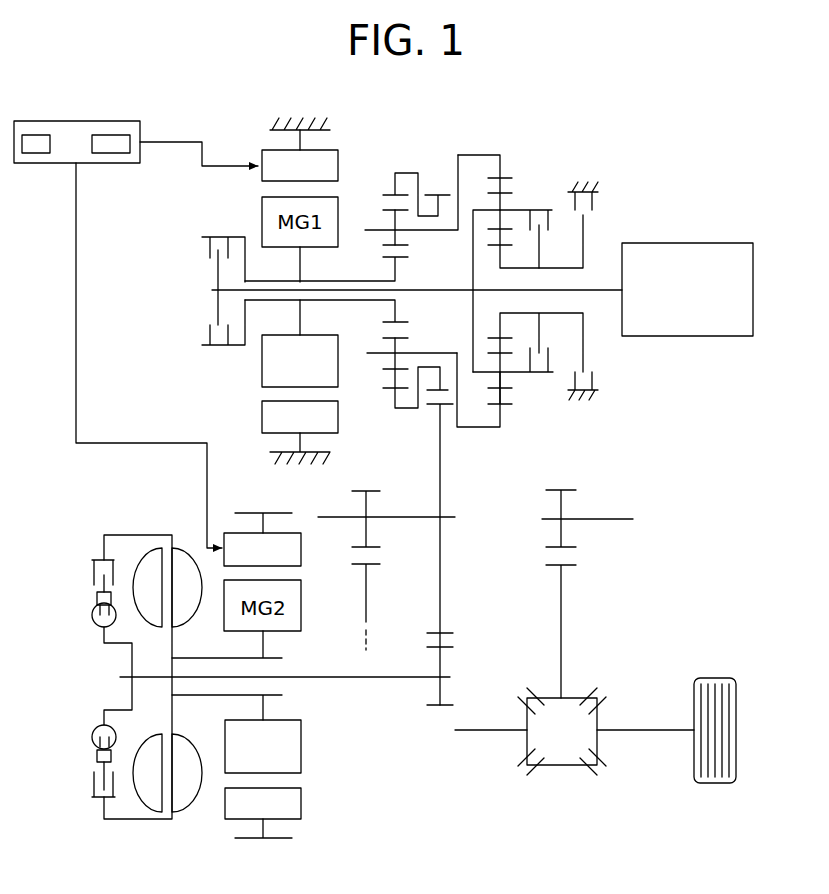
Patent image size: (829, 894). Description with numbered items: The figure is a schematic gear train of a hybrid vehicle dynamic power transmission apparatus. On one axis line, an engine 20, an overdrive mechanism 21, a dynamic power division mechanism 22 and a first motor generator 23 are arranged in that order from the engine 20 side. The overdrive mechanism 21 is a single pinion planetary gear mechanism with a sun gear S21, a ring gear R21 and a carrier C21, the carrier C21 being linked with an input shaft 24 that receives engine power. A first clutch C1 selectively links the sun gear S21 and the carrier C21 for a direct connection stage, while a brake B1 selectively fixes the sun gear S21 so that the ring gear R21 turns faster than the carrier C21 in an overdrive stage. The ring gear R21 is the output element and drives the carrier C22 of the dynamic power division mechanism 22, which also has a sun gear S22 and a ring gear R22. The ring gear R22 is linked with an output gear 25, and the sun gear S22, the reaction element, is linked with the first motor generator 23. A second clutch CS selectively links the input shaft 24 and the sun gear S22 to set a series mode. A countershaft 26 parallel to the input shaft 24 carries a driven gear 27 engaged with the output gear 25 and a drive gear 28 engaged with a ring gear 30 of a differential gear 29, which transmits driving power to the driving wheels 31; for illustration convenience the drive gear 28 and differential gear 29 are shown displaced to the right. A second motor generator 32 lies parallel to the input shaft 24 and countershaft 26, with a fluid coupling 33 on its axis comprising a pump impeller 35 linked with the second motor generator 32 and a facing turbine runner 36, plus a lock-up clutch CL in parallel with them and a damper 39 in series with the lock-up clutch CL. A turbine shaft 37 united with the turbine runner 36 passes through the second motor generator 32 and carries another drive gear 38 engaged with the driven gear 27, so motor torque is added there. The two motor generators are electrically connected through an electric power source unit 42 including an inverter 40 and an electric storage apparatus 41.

The engine 20 is at (690, 243).
The overdrive mechanism 21 is at (546, 254).
The dynamic power division mechanism 22 is at (351, 277).
The first motor generator 23 is at (258, 138).
The input shaft 24 is at (438, 292).
The output gear 25 is at (453, 378).
The countershaft 26 is at (396, 515).
The driven gear 27 is at (430, 406).
The drive gear 28 is at (364, 489).
The differential gear 29 is at (606, 688).
The ring gear 30 is at (368, 566).
The driving wheels 31 is at (738, 731).
The second motor generator 32 is at (313, 780).
The fluid coupling 33 is at (122, 646).
The pump impeller 35 is at (192, 556).
The turbine runner 36 is at (150, 562).
The turbine shaft 37 is at (305, 676).
The drive gear 38 is at (455, 641).
The damper 39 is at (92, 615).
The inverter 40 is at (37, 135).
The electric storage apparatus 41 is at (114, 153).
The electric power source unit 42 is at (86, 121).
The second clutch CS is at (223, 278).
The ring gear R22 is at (395, 196).
The carrier C22 is at (428, 232).
The sun gear S22 is at (385, 258).
The ring gear R21 is at (506, 176).
The first clutch C1 is at (513, 279).
The sun gear S21 is at (506, 246).
The brake B1 is at (584, 184).
The carrier C21 is at (525, 374).
The lock-up clutch CL is at (93, 578).